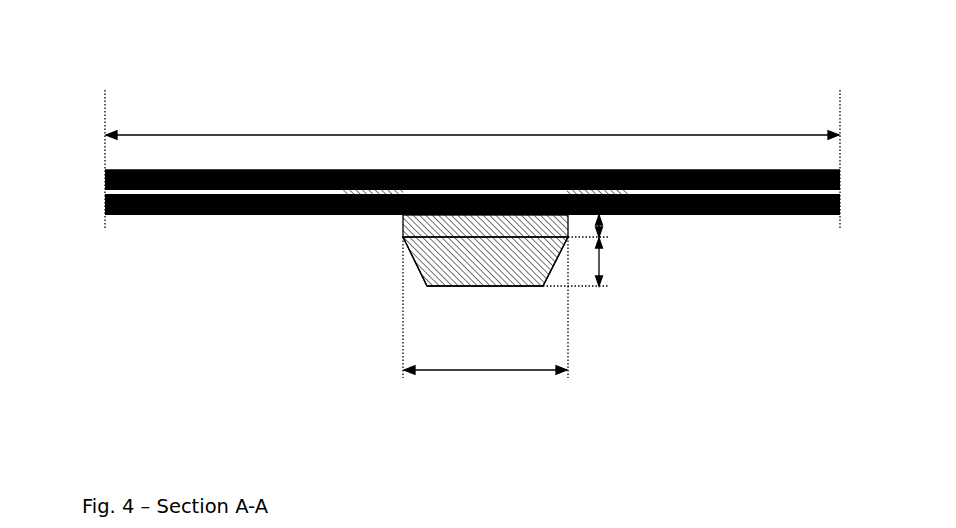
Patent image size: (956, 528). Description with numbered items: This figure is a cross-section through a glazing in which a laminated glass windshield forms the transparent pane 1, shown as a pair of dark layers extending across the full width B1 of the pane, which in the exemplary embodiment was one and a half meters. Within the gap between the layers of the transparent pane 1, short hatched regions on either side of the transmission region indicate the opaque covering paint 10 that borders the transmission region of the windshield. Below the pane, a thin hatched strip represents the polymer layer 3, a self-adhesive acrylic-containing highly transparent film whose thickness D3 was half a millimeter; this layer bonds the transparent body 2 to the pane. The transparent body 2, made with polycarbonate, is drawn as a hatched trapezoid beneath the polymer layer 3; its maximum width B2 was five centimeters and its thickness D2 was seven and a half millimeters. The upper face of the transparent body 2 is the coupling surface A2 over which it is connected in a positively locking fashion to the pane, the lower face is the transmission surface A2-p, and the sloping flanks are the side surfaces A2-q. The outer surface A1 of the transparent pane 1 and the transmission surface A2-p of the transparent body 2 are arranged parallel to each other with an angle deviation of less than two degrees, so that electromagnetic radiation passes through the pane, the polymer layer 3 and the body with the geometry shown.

The transparent pane 1 is at (101, 152).
The opaque covering paint 10 is at (612, 170).
The polymer layer 3 is at (400, 225).
The transparent body 2 is at (424, 265).
The outer surface of the transparent pane A1 is at (513, 161).
The coupling surface of the transparent body A2 is at (415, 245).
The transmission surface of the transparent body A2-p is at (485, 295).
The side surface of the transparent body A2-q is at (561, 271).
The width of the transparent pane B1 is at (472, 122).
The maximum width of the transparent body B2 is at (485, 389).
The thickness of the transparent body D2 is at (619, 262).
The thickness of the polymer layer D3 is at (619, 225).